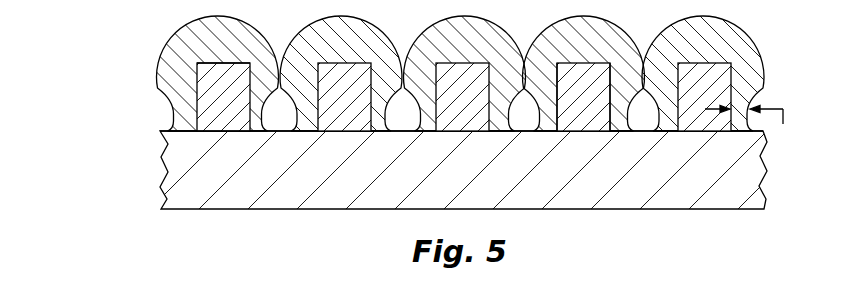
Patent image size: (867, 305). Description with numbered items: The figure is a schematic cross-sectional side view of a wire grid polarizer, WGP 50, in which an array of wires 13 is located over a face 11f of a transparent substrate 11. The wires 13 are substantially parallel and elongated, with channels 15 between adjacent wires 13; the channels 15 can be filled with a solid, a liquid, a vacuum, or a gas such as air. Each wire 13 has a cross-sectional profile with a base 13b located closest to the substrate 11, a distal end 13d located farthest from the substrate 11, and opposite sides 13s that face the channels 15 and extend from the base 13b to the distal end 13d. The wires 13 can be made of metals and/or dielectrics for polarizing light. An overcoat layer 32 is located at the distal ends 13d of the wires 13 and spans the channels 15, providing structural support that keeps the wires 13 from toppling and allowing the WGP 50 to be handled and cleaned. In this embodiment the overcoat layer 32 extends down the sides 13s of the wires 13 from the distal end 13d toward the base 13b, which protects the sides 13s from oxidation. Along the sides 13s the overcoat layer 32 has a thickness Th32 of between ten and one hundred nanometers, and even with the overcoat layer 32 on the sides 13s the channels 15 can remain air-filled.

The wire grid polarizer (WGP) 50 is at (105, 171).
The transparent substrate 11 is at (473, 190).
The face of the transparent substrate 11f is at (184, 130).
The wire 13 is at (460, 96).
The distal end of the wire 13d is at (201, 64).
The base of the wire 13b is at (197, 132).
The sides of the wire 13s is at (634, 146).
The overcoat layer 32 is at (448, 70).
The channel 15 is at (268, 122).
The thickness of the overcoat layer Th32 is at (753, 126).